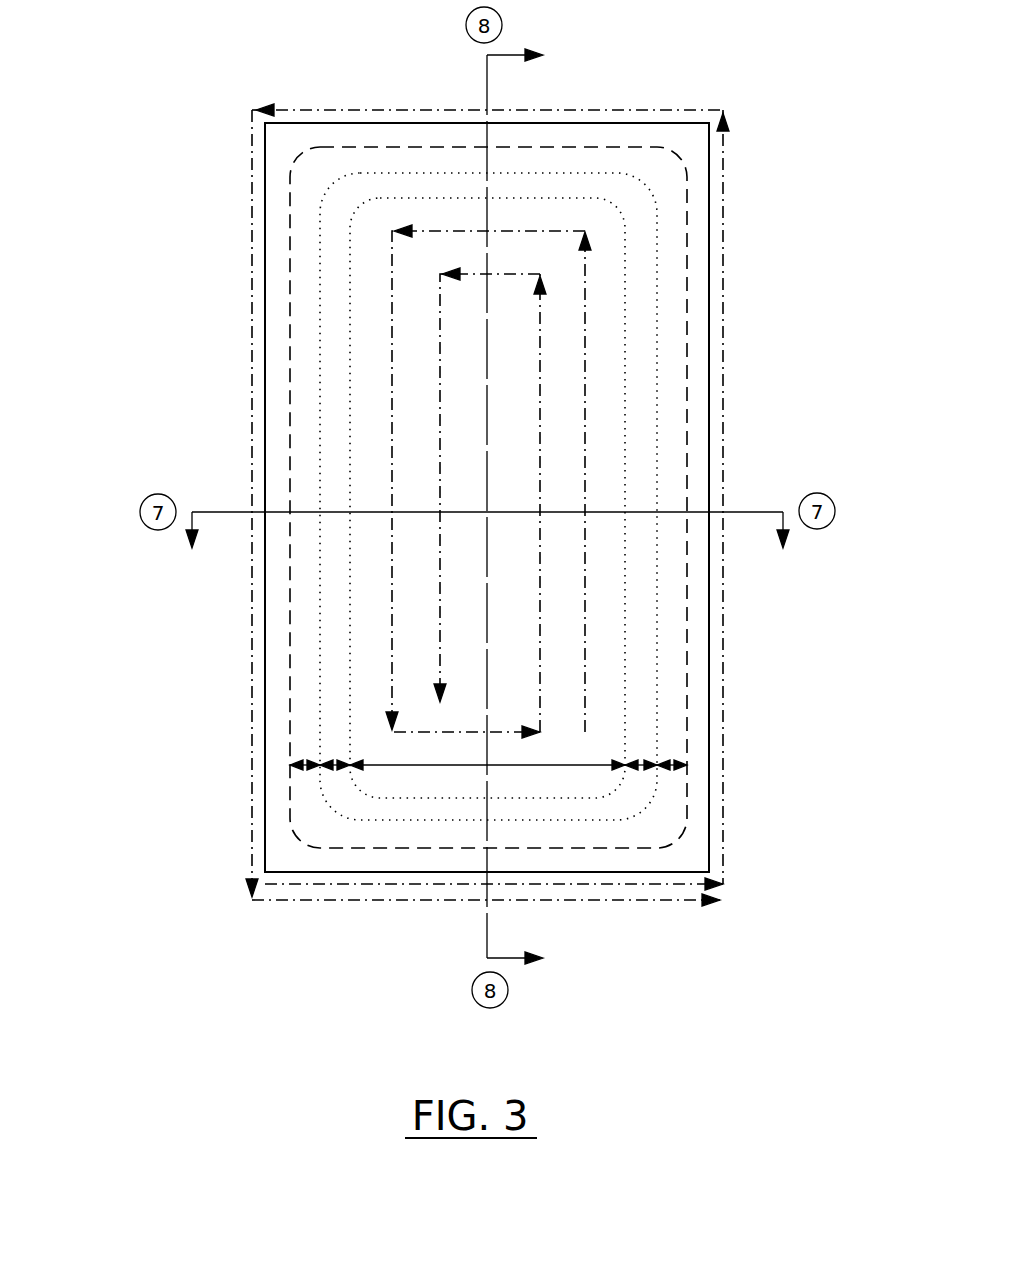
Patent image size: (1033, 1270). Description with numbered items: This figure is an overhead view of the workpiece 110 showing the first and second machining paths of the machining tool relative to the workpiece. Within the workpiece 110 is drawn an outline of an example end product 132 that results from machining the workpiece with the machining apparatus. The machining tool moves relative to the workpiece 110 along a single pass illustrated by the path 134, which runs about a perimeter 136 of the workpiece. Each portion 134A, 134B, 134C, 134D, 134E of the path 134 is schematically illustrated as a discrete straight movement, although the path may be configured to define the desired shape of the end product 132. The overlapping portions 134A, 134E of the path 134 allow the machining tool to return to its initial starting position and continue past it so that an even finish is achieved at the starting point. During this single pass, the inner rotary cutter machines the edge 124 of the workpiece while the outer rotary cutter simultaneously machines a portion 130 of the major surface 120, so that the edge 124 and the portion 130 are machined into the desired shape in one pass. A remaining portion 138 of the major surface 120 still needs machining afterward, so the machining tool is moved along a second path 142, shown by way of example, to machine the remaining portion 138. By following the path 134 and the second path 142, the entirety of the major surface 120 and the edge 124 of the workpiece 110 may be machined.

The workpiece 110 is at (377, 439).
The major surface 120 is at (447, 430).
The edge 124 is at (487, 737).
The portion of the major surface 130 is at (487, 723).
The end product 132 is at (431, 497).
The path 134 is at (480, 518).
The portion of the path 134A is at (494, 926).
The portion of the path 134B is at (783, 497).
The portion of the path 134C is at (487, 73).
The portion of the path 134D is at (184, 503).
The portion of the path 134E is at (486, 949).
The perimeter 136 is at (435, 497).
The remaining portion 138 is at (581, 498).
The second path 142 is at (488, 505).